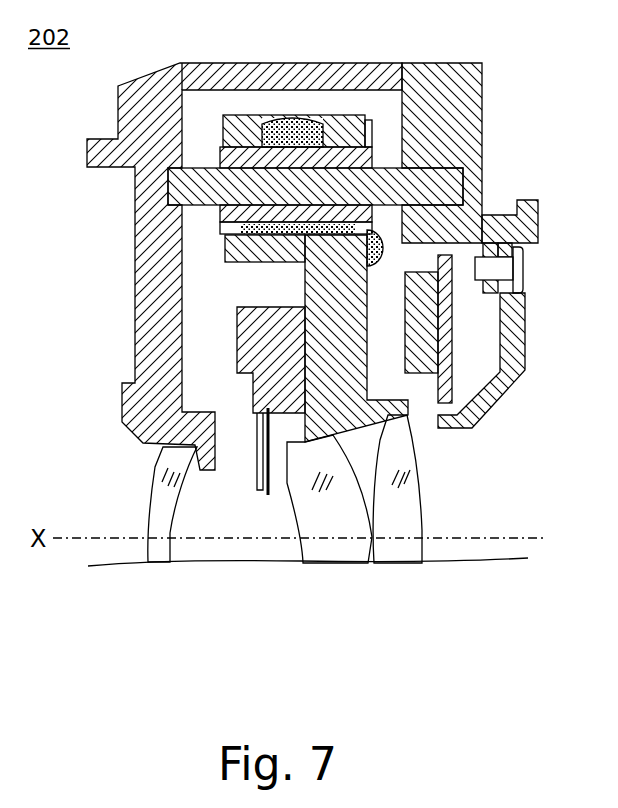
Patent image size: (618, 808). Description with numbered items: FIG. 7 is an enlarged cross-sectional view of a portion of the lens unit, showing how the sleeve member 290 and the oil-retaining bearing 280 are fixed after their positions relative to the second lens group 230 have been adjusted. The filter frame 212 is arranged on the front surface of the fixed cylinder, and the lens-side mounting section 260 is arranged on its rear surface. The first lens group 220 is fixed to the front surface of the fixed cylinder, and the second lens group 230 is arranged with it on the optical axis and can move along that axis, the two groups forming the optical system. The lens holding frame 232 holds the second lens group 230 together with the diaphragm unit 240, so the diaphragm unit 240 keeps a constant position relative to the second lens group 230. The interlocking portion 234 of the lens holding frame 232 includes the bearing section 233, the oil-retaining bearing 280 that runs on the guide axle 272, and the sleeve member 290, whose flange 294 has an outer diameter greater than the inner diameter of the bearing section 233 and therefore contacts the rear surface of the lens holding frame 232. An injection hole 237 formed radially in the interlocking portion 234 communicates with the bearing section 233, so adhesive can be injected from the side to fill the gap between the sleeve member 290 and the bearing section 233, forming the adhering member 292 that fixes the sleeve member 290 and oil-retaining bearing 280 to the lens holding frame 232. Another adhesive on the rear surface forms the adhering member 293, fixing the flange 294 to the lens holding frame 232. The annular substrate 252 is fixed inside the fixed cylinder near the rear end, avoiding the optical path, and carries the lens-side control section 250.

The filter frame 212 is at (113, 165).
The guide axle 272 is at (198, 165).
The interlocking portion 234 is at (227, 115).
The injection hole 237 is at (247, 150).
The adhering member 292 is at (292, 117).
The flange 294 is at (370, 137).
The oil-retaining bearing 280 is at (405, 152).
The adhering member 293 is at (395, 250).
The lens-side mounting section 260 is at (520, 200).
The sleeve member 290 is at (240, 229).
The bearing section 233 is at (300, 258).
The diaphragm unit 240 is at (250, 385).
The lens-side control section 250 is at (430, 325).
The annular substrate 252 is at (447, 385).
The lens holding frame 232 is at (409, 403).
The first lens group 220 is at (145, 495).
The second lens group 230 is at (417, 500).